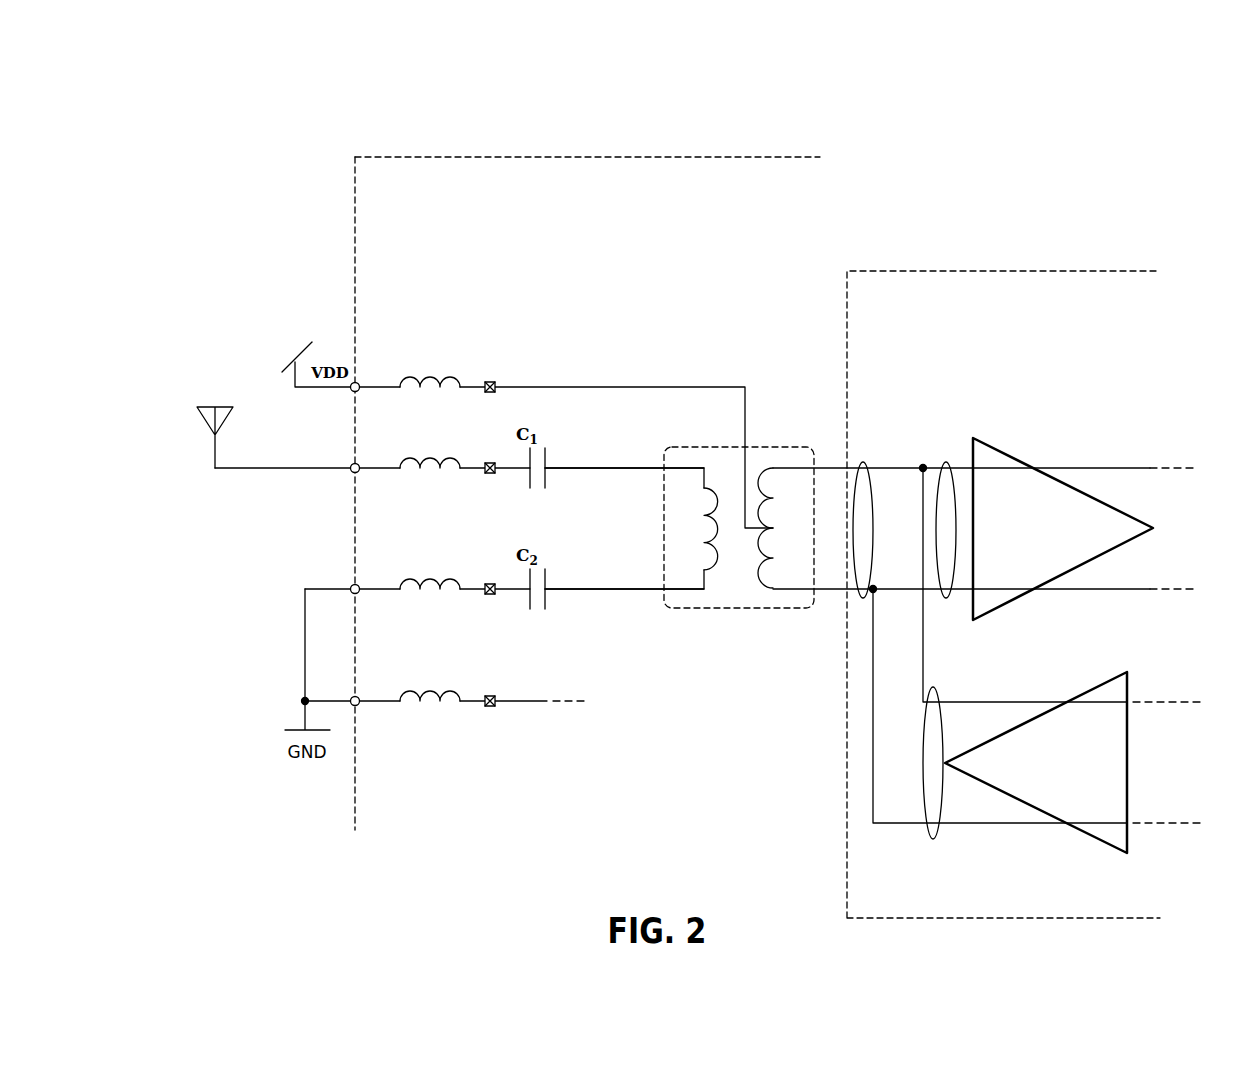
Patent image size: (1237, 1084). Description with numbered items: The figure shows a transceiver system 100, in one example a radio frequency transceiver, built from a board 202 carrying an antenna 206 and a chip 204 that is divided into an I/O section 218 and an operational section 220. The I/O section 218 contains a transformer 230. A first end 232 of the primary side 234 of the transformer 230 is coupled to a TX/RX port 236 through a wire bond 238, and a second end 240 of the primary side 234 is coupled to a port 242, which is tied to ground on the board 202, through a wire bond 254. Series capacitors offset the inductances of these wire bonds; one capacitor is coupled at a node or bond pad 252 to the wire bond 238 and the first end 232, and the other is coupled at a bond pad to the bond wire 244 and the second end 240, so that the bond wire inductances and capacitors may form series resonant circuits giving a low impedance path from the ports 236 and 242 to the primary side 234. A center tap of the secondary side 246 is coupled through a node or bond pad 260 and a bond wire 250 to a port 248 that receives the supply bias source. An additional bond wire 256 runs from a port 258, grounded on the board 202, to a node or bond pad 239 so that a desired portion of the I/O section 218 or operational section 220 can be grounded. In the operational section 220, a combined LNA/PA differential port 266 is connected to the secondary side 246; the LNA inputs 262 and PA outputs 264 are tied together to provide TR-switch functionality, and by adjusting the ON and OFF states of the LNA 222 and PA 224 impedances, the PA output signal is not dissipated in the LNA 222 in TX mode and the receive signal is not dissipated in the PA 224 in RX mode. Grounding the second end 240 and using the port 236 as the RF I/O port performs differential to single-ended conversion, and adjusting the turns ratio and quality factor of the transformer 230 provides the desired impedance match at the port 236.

The wireless device 100 is at (1077, 196).
The board 202 is at (331, 185).
The chip 204 is at (400, 157).
The antenna 206 is at (228, 405).
The I/O section 218 is at (580, 288).
The operational section 220 is at (960, 271).
The LNA 222 is at (1076, 487).
The power amplifier 224 is at (1070, 832).
The transformer 230 is at (800, 447).
The first end of primary side 232 is at (655, 468).
The primary side 234 is at (710, 492).
The TX/RX port 236 is at (358, 463).
The wire bond 238 is at (470, 466).
The switch 239 is at (492, 707).
The second end of primary side 240 is at (641, 590).
The port 242 is at (358, 584).
The bond wire 244 is at (492, 595).
The secondary side 246 is at (770, 500).
The port 248 is at (358, 383).
The bond wire 250 is at (470, 385).
The node or bond pad 252 is at (492, 474).
The wire bond 254 is at (470, 587).
The additional bond wire 256 is at (470, 699).
The port 258 is at (358, 696).
The node or bond pad 260 is at (492, 381).
The LNA inputs 262 is at (944, 463).
The PA outputs 264 is at (934, 838).
The combined LNA/PA differential port 266 is at (864, 463).